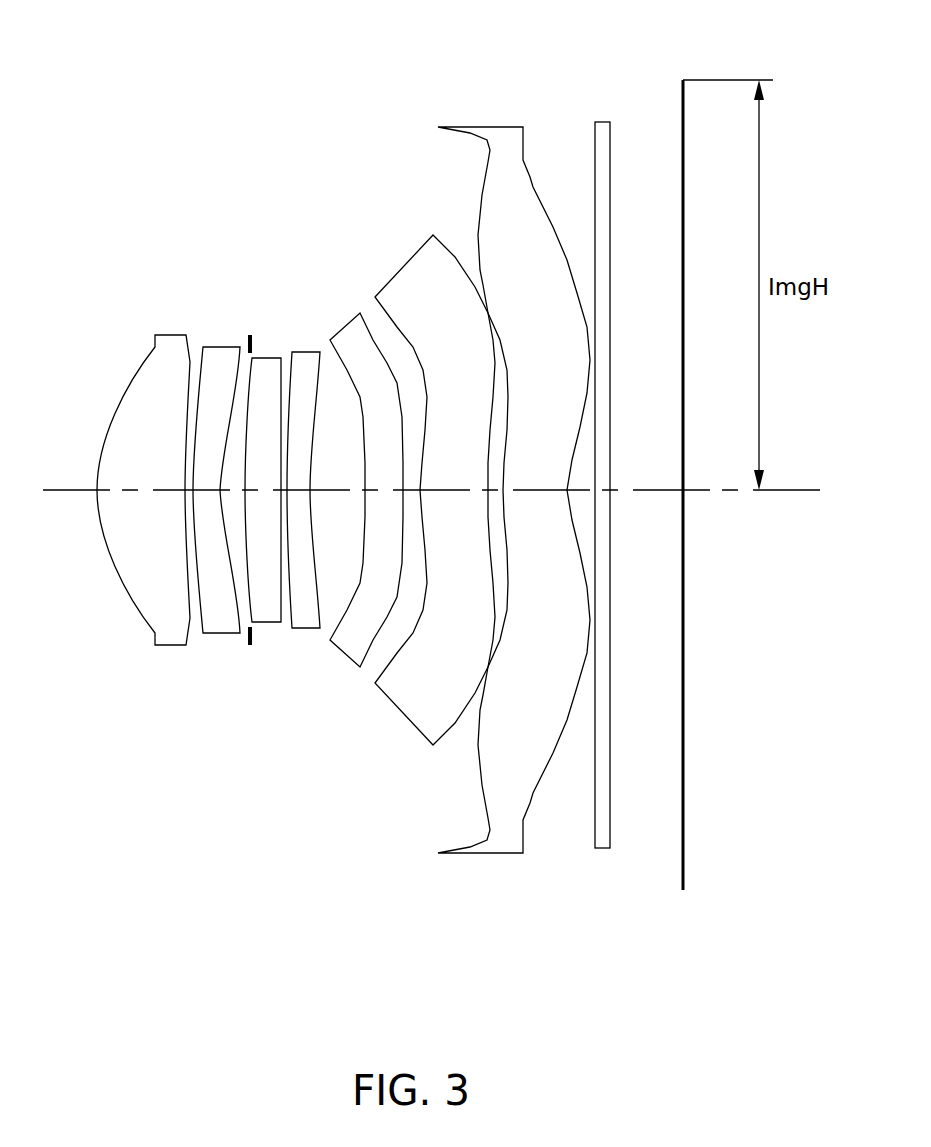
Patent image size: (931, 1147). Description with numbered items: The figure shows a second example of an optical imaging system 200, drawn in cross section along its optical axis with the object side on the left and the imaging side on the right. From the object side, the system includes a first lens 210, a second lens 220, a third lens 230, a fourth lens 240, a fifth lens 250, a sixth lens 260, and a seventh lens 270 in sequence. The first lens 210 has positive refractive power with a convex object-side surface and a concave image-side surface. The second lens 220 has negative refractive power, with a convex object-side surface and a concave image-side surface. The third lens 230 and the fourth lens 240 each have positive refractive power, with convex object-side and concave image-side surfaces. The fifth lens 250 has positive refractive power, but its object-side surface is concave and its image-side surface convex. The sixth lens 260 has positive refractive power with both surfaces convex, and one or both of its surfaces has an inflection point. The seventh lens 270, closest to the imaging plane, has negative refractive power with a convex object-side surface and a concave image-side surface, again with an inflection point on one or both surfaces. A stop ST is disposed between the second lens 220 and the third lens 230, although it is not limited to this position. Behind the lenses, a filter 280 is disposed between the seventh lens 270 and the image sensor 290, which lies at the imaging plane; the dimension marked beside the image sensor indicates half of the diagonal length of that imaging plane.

The optical imaging system 200 is at (234, 156).
The first lens 210 is at (170, 637).
The second lens 220 is at (228, 636).
The third lens 230 is at (273, 625).
The fourth lens 240 is at (310, 635).
The fifth lens 250 is at (350, 648).
The sixth lens 260 is at (403, 702).
The seventh lens 270 is at (498, 845).
The filter 280 is at (607, 850).
The image sensor 290 is at (683, 890).
The stop ST is at (249, 335).